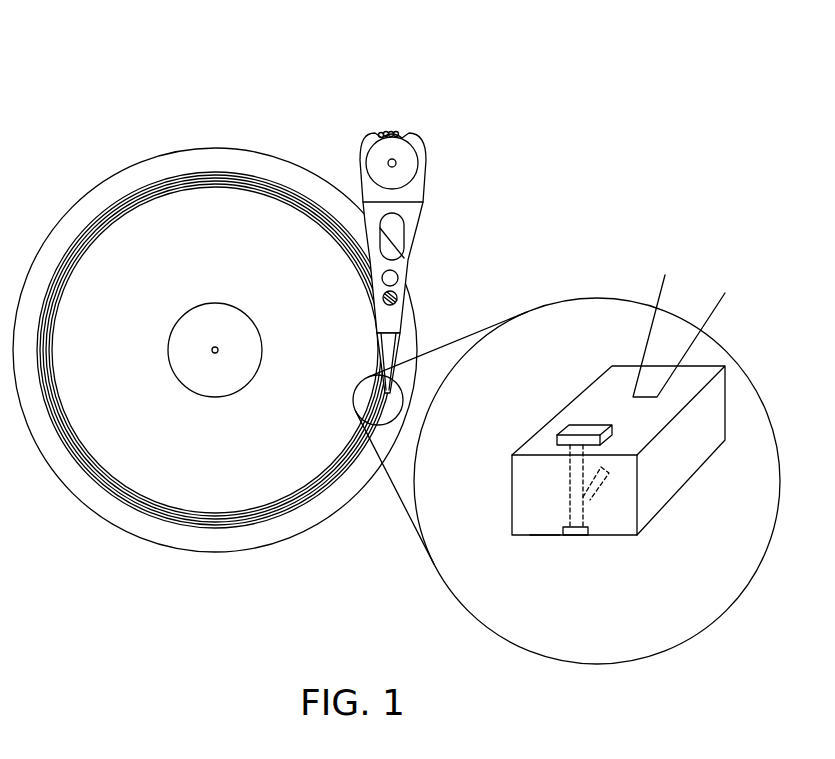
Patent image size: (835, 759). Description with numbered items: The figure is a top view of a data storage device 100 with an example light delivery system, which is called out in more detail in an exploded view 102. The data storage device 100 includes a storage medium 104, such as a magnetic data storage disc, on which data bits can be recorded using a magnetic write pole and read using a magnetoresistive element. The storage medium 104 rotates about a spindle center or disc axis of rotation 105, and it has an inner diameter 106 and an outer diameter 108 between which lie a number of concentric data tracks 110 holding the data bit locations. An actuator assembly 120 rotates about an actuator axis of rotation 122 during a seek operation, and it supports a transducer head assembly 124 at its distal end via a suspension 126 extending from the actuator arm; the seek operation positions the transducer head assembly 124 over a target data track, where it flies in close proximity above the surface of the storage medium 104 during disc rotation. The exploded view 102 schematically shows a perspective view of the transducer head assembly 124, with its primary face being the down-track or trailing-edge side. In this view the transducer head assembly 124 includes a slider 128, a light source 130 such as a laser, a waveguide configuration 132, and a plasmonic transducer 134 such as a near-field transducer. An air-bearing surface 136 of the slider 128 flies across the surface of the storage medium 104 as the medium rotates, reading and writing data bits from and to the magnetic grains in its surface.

The data storage device 100 is at (145, 124).
The exploded view 102 is at (547, 300).
The storage medium 104 is at (228, 147).
The disc axis of rotation 105 is at (215, 352).
The inner diameter 106 is at (178, 322).
The outer diameter 108 is at (228, 530).
The data tracks 110 is at (269, 528).
The actuator assembly 120 is at (418, 232).
The actuator axis of rotation 122 is at (397, 163).
The transducer head assembly 124 is at (365, 384).
The suspension 126 is at (724, 310).
The slider 128 is at (660, 470).
The light source 130 is at (583, 429).
The waveguide configuration 132 is at (572, 496).
The plasmonic transducer 134 is at (583, 535).
The air-bearing surface 136 is at (545, 535).